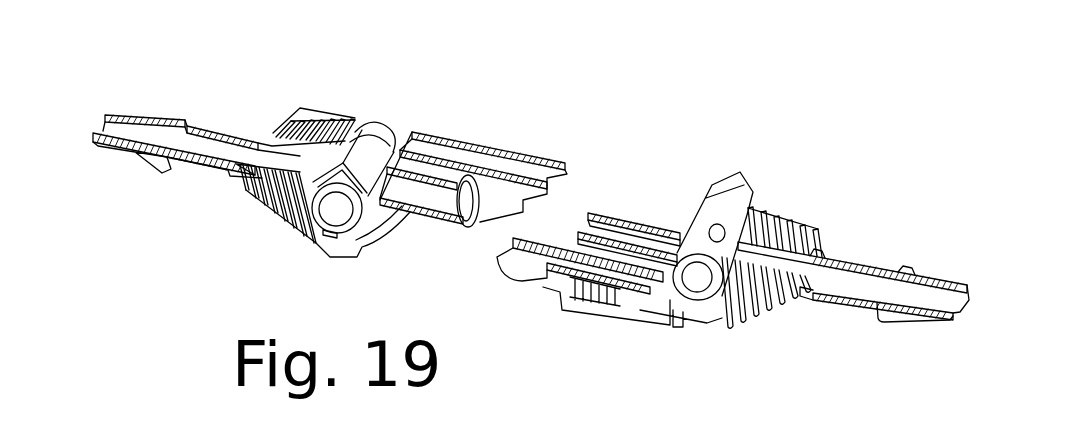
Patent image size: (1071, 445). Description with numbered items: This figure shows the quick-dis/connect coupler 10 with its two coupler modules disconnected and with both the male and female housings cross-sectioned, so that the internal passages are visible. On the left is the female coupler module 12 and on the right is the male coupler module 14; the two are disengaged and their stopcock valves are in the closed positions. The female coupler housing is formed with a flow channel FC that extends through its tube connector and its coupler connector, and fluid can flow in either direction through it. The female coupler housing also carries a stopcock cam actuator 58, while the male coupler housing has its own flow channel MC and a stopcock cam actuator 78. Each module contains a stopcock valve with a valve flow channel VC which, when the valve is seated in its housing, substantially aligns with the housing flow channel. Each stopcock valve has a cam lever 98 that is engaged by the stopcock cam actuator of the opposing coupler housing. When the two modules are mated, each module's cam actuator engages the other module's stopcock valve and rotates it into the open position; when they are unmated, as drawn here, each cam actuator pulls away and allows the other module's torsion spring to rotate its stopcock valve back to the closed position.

The quick-dis/connect coupler 10 is at (593, 112).
The female coupler module 12 is at (380, 104).
The male coupler module 14 is at (803, 207).
The stopcock cam actuator 58 is at (530, 190).
The stopcock cam actuator 78 is at (523, 255).
The cam lever 98 is at (330, 188).
The valve flow channel VC is at (340, 150).
The flow channel MC is at (652, 221).
The flow channel FC is at (416, 186).